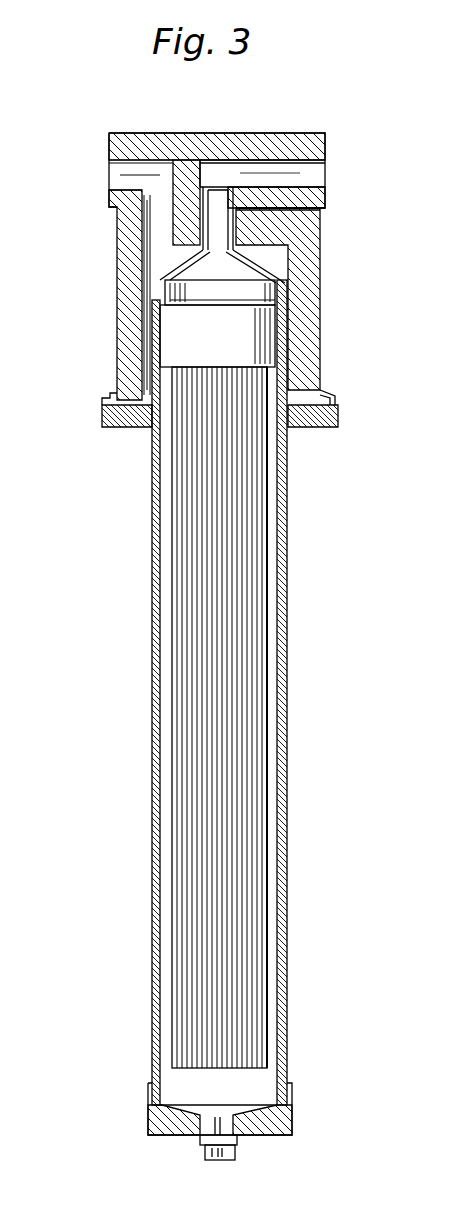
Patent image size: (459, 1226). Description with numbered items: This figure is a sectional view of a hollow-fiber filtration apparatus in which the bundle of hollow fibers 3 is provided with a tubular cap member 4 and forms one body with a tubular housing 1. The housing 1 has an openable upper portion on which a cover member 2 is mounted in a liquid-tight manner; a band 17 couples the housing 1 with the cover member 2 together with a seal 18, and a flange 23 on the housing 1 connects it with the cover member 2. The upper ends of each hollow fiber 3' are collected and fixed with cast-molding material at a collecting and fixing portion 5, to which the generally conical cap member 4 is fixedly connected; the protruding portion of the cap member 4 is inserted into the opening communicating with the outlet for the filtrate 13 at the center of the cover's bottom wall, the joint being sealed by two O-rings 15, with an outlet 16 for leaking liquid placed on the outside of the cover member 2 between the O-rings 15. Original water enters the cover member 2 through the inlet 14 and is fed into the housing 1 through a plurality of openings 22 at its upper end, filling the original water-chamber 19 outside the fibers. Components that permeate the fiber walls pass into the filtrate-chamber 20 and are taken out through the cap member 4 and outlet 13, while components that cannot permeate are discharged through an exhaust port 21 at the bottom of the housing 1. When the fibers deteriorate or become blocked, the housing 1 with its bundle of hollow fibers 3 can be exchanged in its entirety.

The tubular housing 1 is at (287, 720).
The cover member 2 is at (287, 133).
The bundle of hollow fibers 3 is at (264, 717).
The hollow fiber 3' is at (311, 692).
The tubular cap member 4 is at (320, 262).
The collecting and fixing portion 5 is at (265, 345).
The outlet for the filtrate 13 is at (318, 170).
The inlet for the original water 14 is at (108, 176).
The O-ring 15 is at (200, 228).
The outlet for leaking liquid 16 is at (322, 225).
The band 17 is at (335, 400).
The seal 18 is at (310, 430).
The original water-chamber 19 is at (165, 590).
The filtrate-chamber 20 is at (290, 290).
The exhaust port 21 is at (215, 1153).
The openings 22 is at (148, 385).
The flange 23 is at (138, 428).